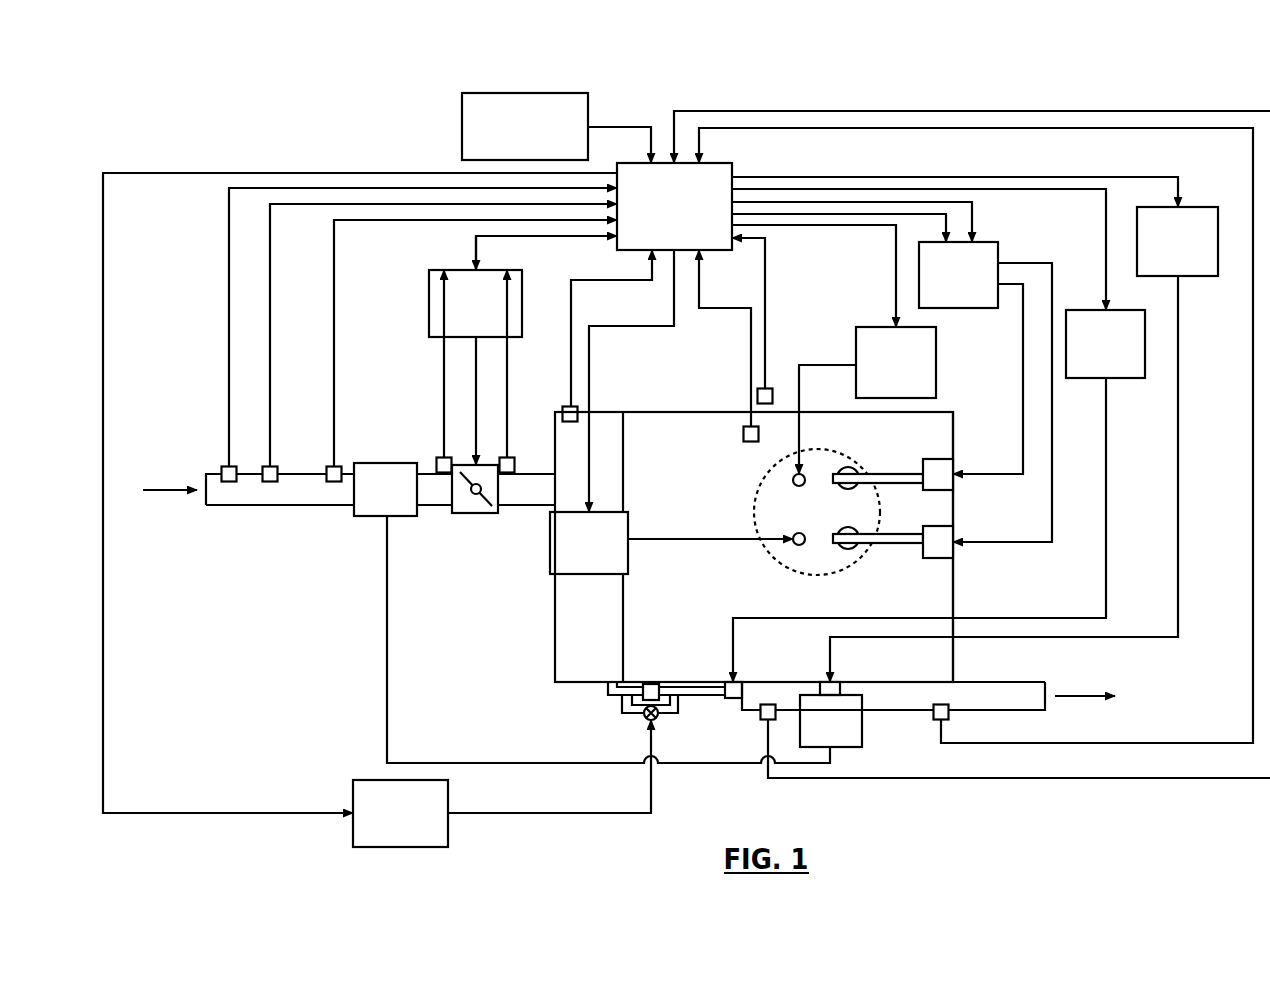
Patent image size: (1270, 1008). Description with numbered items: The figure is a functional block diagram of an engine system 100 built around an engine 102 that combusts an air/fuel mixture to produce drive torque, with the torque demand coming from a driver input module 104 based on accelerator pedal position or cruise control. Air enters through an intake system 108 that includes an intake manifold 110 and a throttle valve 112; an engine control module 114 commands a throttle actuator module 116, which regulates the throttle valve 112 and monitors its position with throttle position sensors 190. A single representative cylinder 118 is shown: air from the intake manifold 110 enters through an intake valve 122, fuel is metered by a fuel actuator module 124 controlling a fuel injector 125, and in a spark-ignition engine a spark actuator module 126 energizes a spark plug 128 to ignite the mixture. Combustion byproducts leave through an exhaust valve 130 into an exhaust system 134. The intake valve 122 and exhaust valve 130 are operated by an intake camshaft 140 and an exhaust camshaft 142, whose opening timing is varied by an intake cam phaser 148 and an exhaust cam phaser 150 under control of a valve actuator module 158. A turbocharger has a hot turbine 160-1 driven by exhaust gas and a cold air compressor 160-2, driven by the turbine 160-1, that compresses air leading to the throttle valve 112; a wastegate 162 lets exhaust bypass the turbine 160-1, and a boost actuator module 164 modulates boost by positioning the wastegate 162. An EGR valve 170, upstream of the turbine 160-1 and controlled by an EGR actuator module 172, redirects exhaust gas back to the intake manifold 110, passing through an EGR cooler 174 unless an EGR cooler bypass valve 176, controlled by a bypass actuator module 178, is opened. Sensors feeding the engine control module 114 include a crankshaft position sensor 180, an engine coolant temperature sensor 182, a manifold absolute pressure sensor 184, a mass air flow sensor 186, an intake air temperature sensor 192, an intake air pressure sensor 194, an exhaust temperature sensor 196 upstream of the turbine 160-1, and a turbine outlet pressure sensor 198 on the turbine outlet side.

The engine system 100 is at (202, 90).
The engine 102 is at (954, 421).
The driver input module 104 is at (462, 122).
The intake system 108 is at (310, 633).
The intake manifold 110 is at (554, 620).
The throttle valve 112 is at (468, 514).
The engine control module 114 is at (732, 169).
The throttle actuator module 116 is at (456, 269).
The cylinder 118 is at (779, 567).
The intake valve 122 is at (848, 467).
The fuel actuator module 124 is at (609, 574).
The fuel injector 125 is at (791, 539).
The spark actuator module 126 is at (936, 365).
The spark plug 128 is at (791, 478).
The exhaust valve 130 is at (848, 551).
The exhaust system 134 is at (1083, 792).
The intake camshaft 140 is at (897, 474).
The exhaust camshaft 142 is at (903, 544).
The intake cam phaser 148 is at (938, 459).
The exhaust cam phaser 150 is at (938, 558).
The valve actuator module 158 is at (998, 252).
The turbine 160-1 is at (862, 728).
The compressor 160-2 is at (372, 516).
The wastegate 162 is at (842, 682).
The boost actuator module 164 is at (1197, 276).
The EGR valve 170 is at (728, 698).
The EGR actuator module 172 is at (1124, 378).
The EGR cooler 174 is at (655, 684).
The EGR cooler bypass valve 176 is at (648, 722).
The bypass actuator module 178 is at (352, 795).
The crankshaft position sensor 180 is at (772, 388).
The engine coolant temperature sensor 182 is at (750, 442).
The manifold absolute pressure sensor 184 is at (565, 407).
The mass air flow sensor 186 is at (340, 465).
The throttle position sensor 190 is at (443, 476).
The intake air temperature sensor 192 is at (278, 468).
The intake air pressure sensor 194 is at (222, 468).
The exhaust temperature sensor 196 is at (770, 704).
The turbine outlet pressure sensor 198 is at (947, 704).